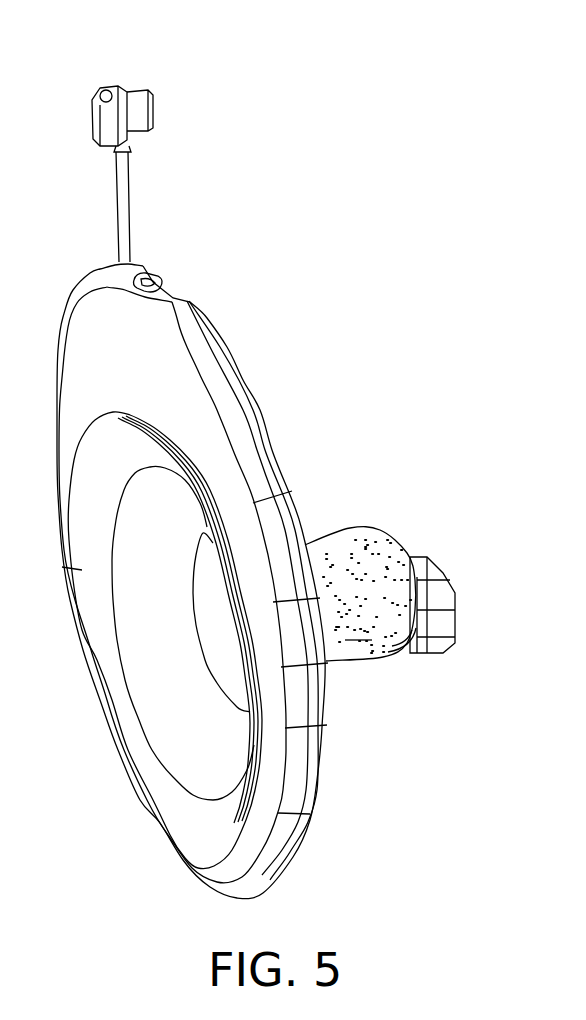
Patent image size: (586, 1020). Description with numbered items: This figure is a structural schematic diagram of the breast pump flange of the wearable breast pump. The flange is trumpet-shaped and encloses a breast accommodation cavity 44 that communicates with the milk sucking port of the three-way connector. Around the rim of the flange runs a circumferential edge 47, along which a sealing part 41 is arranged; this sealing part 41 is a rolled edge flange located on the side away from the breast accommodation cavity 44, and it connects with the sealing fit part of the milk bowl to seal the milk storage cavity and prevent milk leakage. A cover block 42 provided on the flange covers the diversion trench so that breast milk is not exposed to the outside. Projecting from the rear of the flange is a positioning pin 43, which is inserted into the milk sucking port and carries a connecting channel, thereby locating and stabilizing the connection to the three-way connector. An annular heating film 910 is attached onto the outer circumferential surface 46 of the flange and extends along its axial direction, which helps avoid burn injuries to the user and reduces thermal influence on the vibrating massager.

The sealing part 41 is at (163, 279).
The cover block 42 is at (143, 113).
The positioning pin 43 is at (443, 640).
The breast accommodation cavity 44 is at (163, 707).
The outer circumferential surface 46 is at (362, 528).
The circumferential edge 47 is at (232, 352).
The annular heating film 910 is at (350, 640).